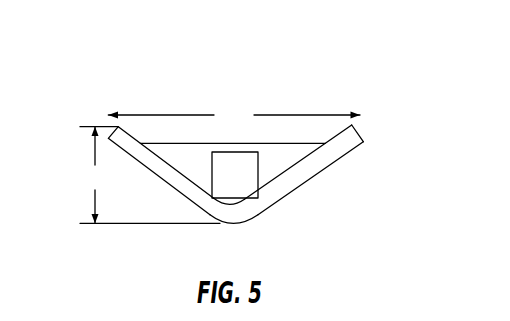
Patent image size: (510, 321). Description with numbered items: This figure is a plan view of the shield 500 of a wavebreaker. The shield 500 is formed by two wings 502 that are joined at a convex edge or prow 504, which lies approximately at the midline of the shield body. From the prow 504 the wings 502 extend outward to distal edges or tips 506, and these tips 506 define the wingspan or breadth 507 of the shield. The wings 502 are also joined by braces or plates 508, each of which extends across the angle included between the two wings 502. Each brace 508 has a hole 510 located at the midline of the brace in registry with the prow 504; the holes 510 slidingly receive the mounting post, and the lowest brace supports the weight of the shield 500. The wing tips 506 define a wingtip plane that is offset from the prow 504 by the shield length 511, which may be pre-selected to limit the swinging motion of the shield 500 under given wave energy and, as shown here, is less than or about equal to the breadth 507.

The shield 500 is at (117, 57).
The wings 502 is at (179, 190).
The prow 504 is at (237, 227).
The tips 506 is at (356, 124).
The breadth 507 is at (234, 116).
The braces 508 is at (208, 168).
The hole 510 is at (254, 186).
The shield length 511 is at (149, 175).